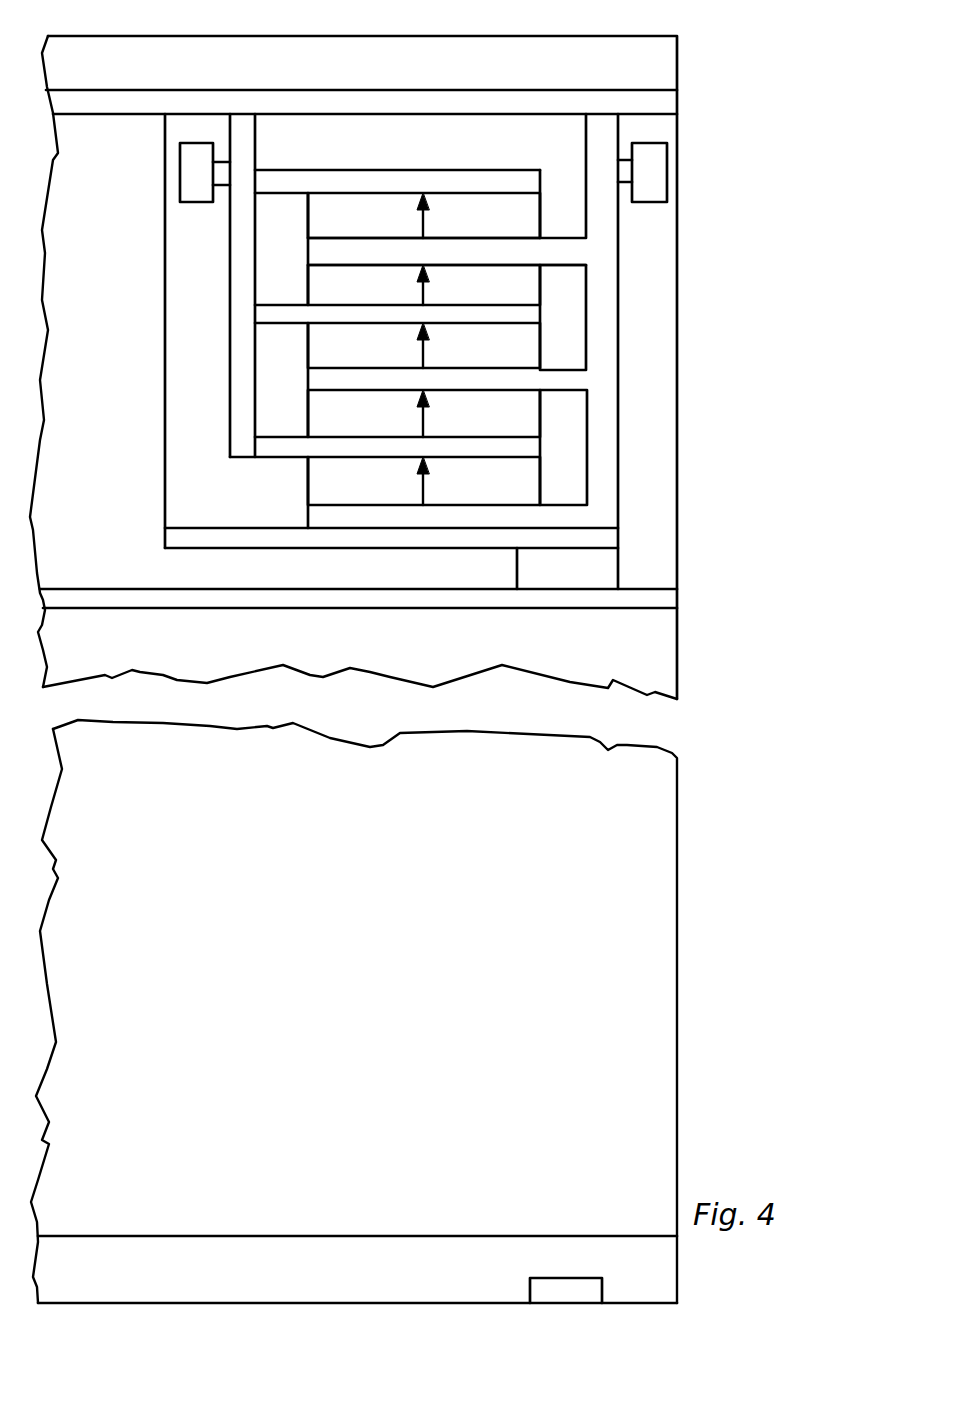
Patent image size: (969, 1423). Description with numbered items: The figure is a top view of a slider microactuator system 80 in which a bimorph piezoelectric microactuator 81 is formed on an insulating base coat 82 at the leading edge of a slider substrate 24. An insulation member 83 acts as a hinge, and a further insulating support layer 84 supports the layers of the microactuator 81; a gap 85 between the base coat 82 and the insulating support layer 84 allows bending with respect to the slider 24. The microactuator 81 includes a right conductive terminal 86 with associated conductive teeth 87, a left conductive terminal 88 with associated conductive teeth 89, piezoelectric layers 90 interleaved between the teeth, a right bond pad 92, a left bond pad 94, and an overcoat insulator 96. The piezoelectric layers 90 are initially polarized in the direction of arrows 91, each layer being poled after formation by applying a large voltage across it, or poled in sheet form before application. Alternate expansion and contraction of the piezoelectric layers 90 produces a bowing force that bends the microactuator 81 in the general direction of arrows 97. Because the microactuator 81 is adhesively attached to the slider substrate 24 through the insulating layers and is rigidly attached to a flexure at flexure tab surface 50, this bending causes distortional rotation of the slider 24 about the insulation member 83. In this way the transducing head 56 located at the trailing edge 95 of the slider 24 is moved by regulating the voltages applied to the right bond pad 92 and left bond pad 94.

The flexure tab surface 50 is at (577, 50).
The overcoat insulator 96 is at (663, 105).
The slider substrate 24 is at (668, 652).
The insulating base coat 82 is at (668, 598).
The trailing edge 95 is at (258, 1303).
The transducing head 56 is at (562, 1303).
The bimorph piezoelectric microactuator 81 is at (635, 245).
The right conductive terminal 86 is at (620, 447).
The insulating support layer 84 is at (167, 540).
The insulation member 83 is at (540, 568).
The left conductive terminal 88 is at (230, 365).
The conductive teeth 89 is at (345, 170).
The piezoelectric layers 90 is at (507, 230).
The conductive teeth 87 is at (555, 253).
The arrows 91 is at (421, 221).
The left bond pad 94 is at (180, 162).
The right bond pad 92 is at (668, 165).
The arrows 97 is at (148, 532).
The gap 85 is at (257, 574).
The slider microactuator system 80 is at (700, 728).